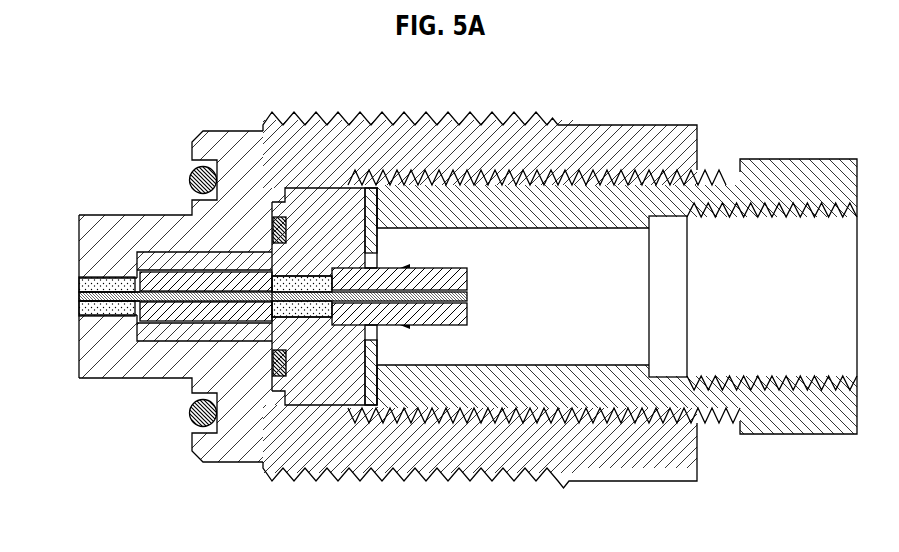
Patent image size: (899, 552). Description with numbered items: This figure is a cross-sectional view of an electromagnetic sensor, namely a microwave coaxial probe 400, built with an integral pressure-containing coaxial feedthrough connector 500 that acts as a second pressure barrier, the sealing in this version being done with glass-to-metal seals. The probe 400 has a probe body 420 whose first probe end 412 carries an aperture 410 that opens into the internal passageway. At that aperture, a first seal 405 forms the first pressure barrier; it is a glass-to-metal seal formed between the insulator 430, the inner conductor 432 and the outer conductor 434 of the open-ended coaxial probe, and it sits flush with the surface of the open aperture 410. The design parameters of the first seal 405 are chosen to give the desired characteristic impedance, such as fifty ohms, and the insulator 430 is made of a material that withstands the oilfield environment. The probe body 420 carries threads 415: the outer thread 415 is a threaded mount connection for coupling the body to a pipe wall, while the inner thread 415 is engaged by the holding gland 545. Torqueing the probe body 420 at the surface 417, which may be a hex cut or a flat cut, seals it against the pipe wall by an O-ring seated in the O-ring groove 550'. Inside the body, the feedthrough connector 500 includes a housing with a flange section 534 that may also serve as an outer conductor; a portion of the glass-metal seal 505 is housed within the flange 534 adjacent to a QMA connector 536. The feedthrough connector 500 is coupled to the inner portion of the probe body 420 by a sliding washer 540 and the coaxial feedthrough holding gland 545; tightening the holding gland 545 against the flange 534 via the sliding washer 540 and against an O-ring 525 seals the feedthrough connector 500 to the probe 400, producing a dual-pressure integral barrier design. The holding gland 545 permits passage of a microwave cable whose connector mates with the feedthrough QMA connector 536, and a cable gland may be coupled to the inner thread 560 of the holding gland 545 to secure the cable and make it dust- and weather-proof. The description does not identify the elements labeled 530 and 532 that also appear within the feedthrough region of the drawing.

The microwave coaxial probe 400 is at (163, 108).
The first seal 405 is at (107, 265).
The aperture 410 is at (73, 289).
The first probe end 412 is at (121, 204).
The threaded mount connection 415 is at (492, 165).
The surface 417 is at (637, 470).
The probe body 420 is at (487, 450).
The insulator 430 is at (121, 318).
The inner conductor 432 is at (102, 318).
The outer conductor 434 is at (152, 214).
The coaxial feedthrough connector 500 is at (221, 251).
The glass-metal seal 505 is at (300, 322).
The O-ring 525 is at (272, 362).
The electrode housing 530 is at (304, 215).
The central conductor 532 is at (314, 322).
The flange section 534 is at (331, 205).
The QMA connector 536 is at (474, 287).
The sliding washer 540 is at (379, 205).
The holding gland 545 is at (792, 158).
The O-ring groove 550' is at (188, 335).
The inner thread 560 is at (768, 217).